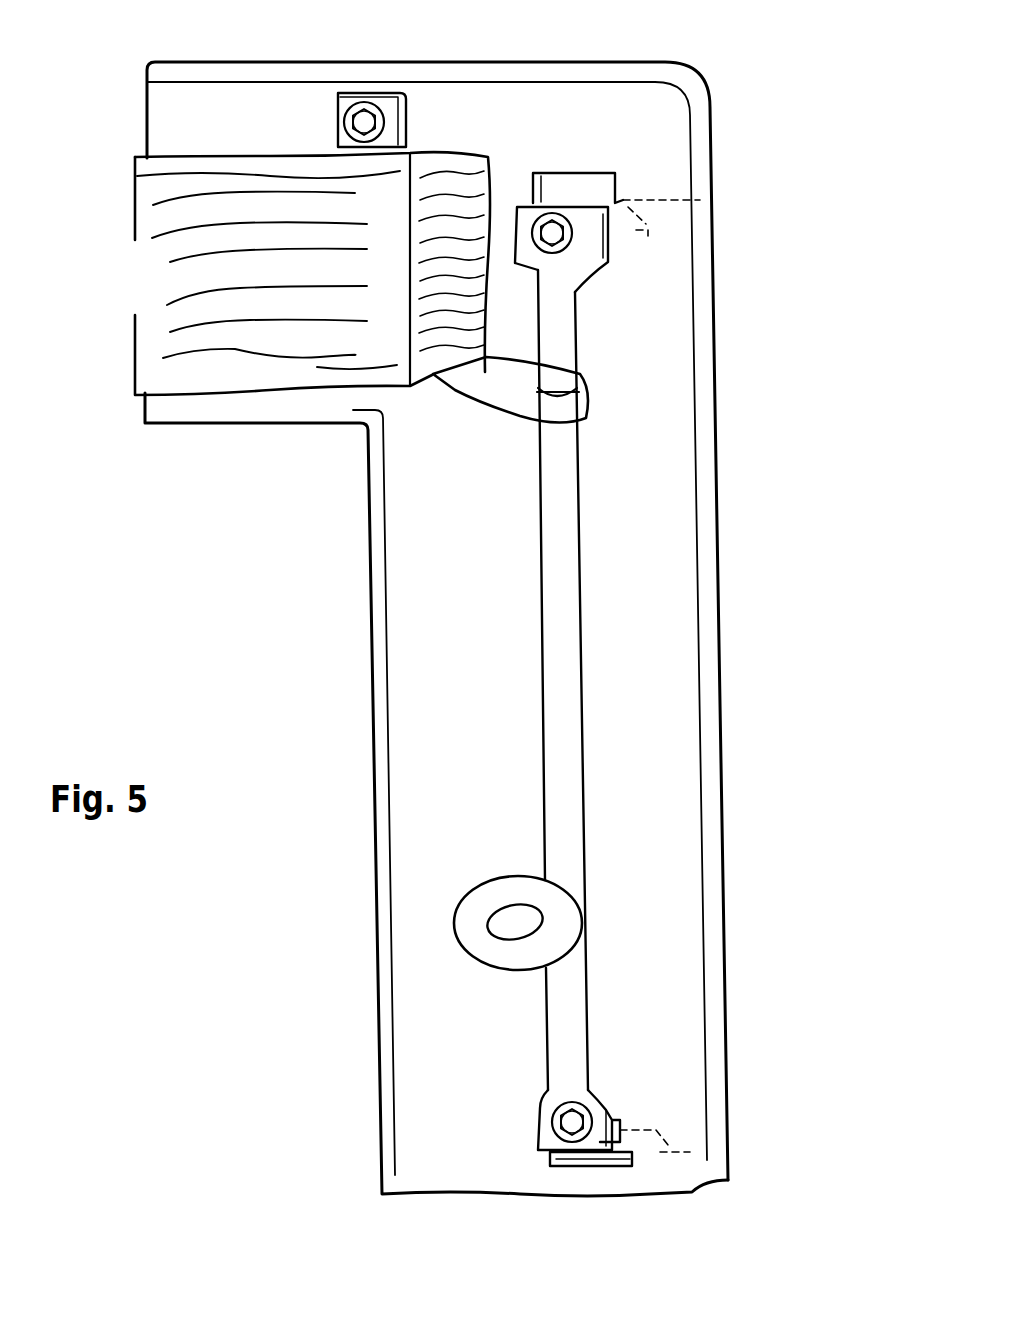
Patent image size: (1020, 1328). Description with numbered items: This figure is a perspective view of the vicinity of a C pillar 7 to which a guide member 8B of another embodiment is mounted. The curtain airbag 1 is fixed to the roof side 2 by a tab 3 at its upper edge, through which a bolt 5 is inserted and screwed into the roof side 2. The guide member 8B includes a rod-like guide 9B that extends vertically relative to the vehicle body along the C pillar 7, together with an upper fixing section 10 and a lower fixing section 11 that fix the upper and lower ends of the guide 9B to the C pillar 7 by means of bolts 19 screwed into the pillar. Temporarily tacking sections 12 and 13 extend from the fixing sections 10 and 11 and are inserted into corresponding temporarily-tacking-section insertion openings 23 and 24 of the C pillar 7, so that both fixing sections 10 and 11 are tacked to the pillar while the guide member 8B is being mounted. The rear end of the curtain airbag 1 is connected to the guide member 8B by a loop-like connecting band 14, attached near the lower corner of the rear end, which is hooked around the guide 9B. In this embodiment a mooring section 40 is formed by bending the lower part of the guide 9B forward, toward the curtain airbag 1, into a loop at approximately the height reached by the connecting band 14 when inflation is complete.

The curtain airbag 1 is at (222, 378).
The roof side 2 is at (175, 117).
The tab 3 is at (327, 88).
The bolt 5 is at (387, 86).
The C pillar 7 is at (672, 782).
The guide member 8B is at (602, 555).
The guide 9B is at (577, 686).
The upper fixing section 10 is at (609, 245).
The lower fixing section 11 is at (616, 1118).
The upper temporarily tacking section 12 is at (665, 202).
The lower temporarily tacking section 13 is at (700, 1134).
The connecting band 14 is at (470, 402).
The bolt 19 is at (534, 262).
The temporarily-tacking-section insertion opening 23 is at (590, 170).
The temporarily-tacking-section insertion opening 24 is at (550, 1165).
The mooring section 40 is at (476, 950).